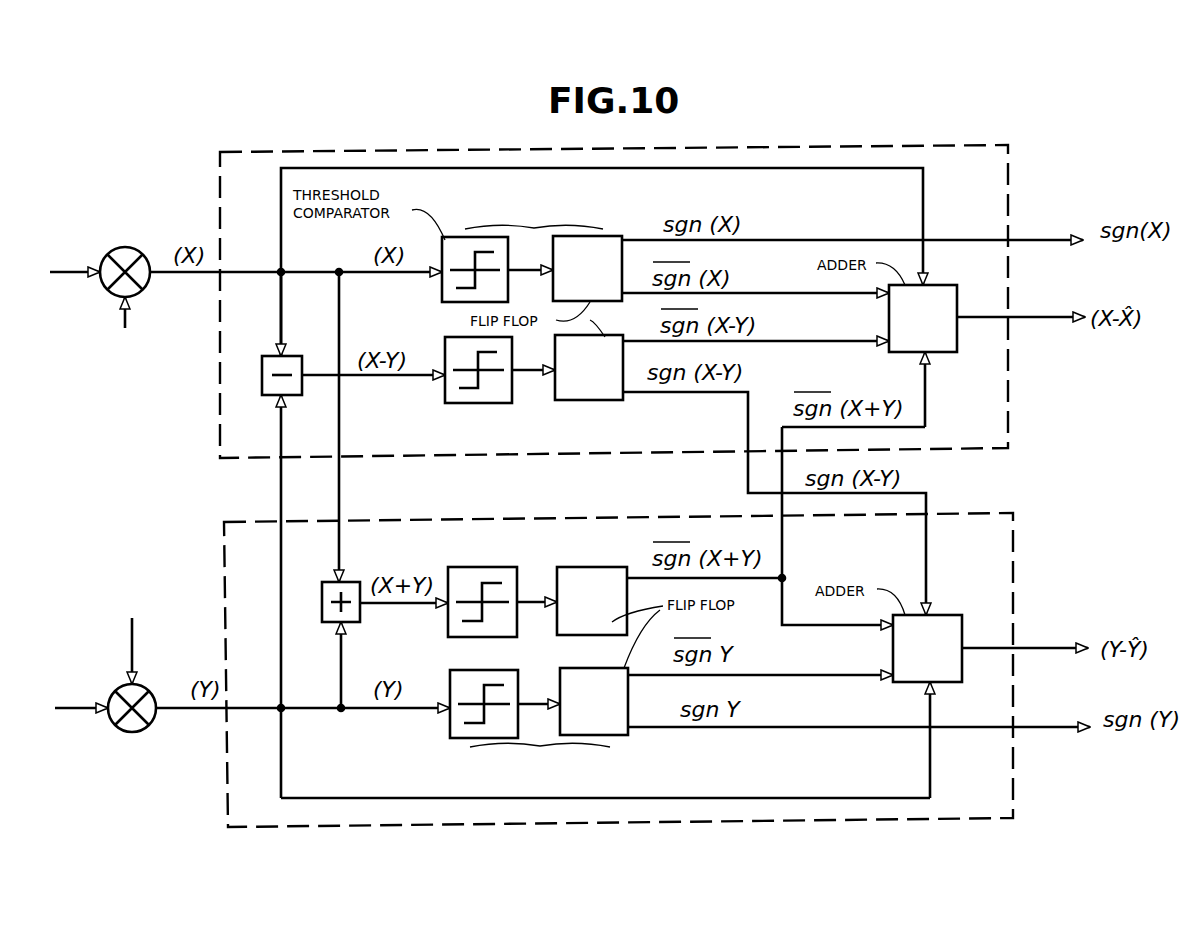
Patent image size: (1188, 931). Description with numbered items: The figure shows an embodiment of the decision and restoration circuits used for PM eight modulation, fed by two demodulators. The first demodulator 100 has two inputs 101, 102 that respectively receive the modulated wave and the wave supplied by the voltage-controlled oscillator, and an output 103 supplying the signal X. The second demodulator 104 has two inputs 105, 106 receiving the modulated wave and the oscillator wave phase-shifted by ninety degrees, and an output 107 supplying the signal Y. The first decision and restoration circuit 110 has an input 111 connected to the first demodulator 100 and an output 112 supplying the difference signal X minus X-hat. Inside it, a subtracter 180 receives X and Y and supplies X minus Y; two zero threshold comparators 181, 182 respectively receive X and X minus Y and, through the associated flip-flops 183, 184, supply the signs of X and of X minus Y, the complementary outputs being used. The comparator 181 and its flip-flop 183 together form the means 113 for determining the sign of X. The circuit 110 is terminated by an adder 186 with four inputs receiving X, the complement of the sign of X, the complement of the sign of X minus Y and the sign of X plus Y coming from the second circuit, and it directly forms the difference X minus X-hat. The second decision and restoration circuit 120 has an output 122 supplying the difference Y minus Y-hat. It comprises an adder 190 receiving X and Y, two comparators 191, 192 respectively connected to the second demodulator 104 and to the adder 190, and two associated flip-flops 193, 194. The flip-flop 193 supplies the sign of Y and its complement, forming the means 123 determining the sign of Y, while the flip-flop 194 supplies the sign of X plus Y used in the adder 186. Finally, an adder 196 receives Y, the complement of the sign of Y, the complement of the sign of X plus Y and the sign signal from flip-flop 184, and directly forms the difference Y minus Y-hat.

The first demodulator 100 is at (126, 246).
The input of first demodulator 101 is at (104, 257).
The input of first demodulator 102 is at (118, 303).
The output of first demodulator 103 is at (151, 280).
The second demodulator 104 is at (131, 734).
The input of second demodulator 105 is at (106, 719).
The input of second demodulator 106 is at (127, 684).
The output of second demodulator 107 is at (157, 712).
The first decision and restoration circuit 110 is at (718, 149).
The input of first decision and restoration circuit 111 is at (222, 269).
The output of first decision and restoration circuit 112 is at (1004, 320).
The first zero threshold comparator 113 is at (534, 211).
The second decision and restoration circuit 120 is at (603, 521).
The output of second decision and restoration circuit 122 is at (1011, 648).
The third zero threshold comparator 123 is at (540, 764).
The subtracter 180 is at (273, 360).
The zero threshold comparator 181 is at (442, 293).
The zero threshold comparator 182 is at (445, 398).
The flip-flop 183 is at (587, 268).
The flip-flop 184 is at (589, 367).
The adder 186 is at (923, 356).
The adder 190 is at (358, 617).
The comparator 191 is at (450, 723).
The comparator 192 is at (469, 576).
The flip-flop 193 is at (594, 701).
The flip-flop 194 is at (592, 601).
The adder 196 is at (927, 706).